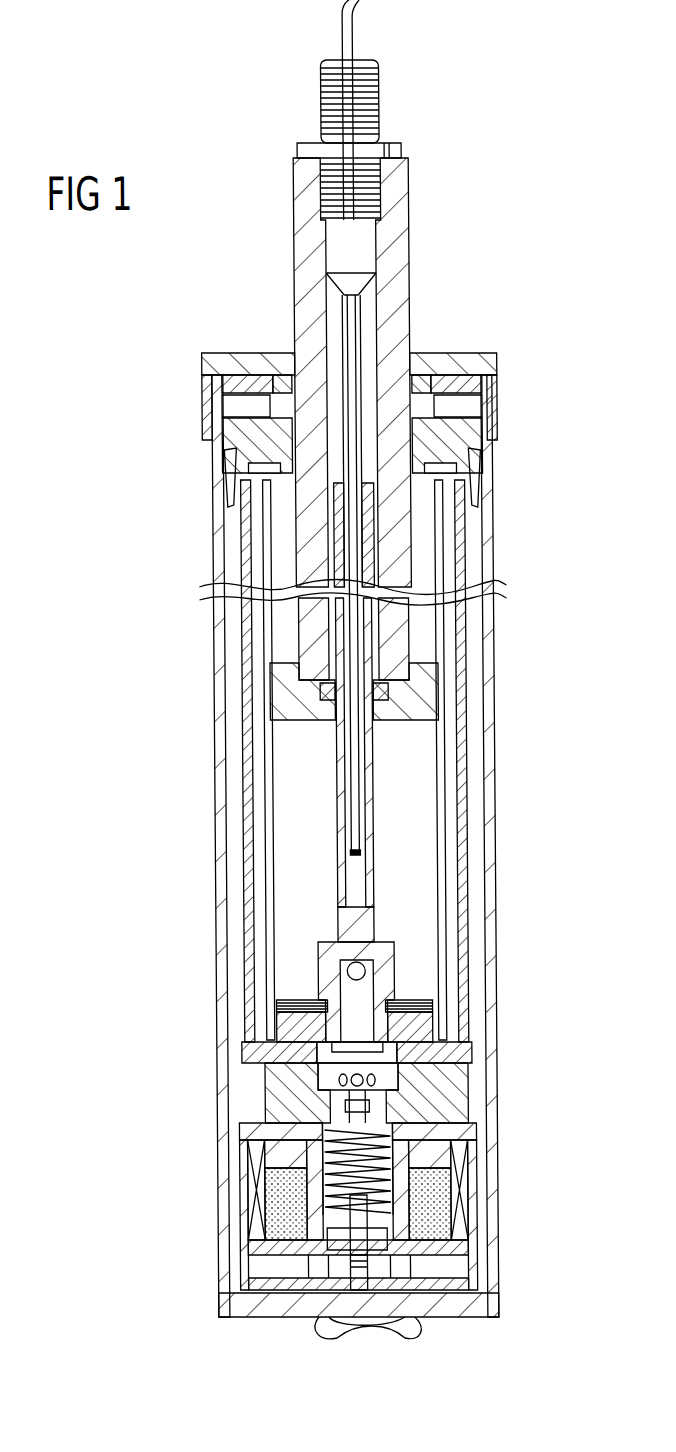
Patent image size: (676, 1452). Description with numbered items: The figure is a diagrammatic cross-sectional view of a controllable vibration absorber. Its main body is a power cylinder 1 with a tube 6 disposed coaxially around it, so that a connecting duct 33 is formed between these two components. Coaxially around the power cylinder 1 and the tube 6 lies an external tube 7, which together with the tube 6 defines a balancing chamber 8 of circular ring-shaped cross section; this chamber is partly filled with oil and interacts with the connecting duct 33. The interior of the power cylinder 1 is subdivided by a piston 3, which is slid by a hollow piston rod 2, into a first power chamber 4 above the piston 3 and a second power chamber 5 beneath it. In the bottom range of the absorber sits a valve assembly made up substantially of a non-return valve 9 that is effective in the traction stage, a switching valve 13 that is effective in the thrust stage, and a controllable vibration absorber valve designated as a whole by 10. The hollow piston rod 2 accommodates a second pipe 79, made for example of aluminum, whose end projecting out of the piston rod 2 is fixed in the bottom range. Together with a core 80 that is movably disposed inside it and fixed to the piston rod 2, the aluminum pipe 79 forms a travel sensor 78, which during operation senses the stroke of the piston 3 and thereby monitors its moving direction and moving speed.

The power cylinder 1 is at (447, 500).
The hollow piston rod 2 is at (389, 245).
The piston 3 is at (285, 693).
The first power chamber 4 is at (275, 617).
The second power chamber 5 is at (414, 825).
The tube 6 is at (455, 705).
The external tube 7 is at (488, 620).
The balancing chamber 8 is at (465, 650).
The non-return valve 9 is at (434, 1018).
The controllable vibration absorber valve 10 is at (389, 1112).
The switching valve 13 is at (348, 1030).
The connecting duct 33 is at (251, 882).
The travel sensor 78 is at (372, 538).
The second pipe 79 is at (339, 540).
The core 80 is at (352, 775).